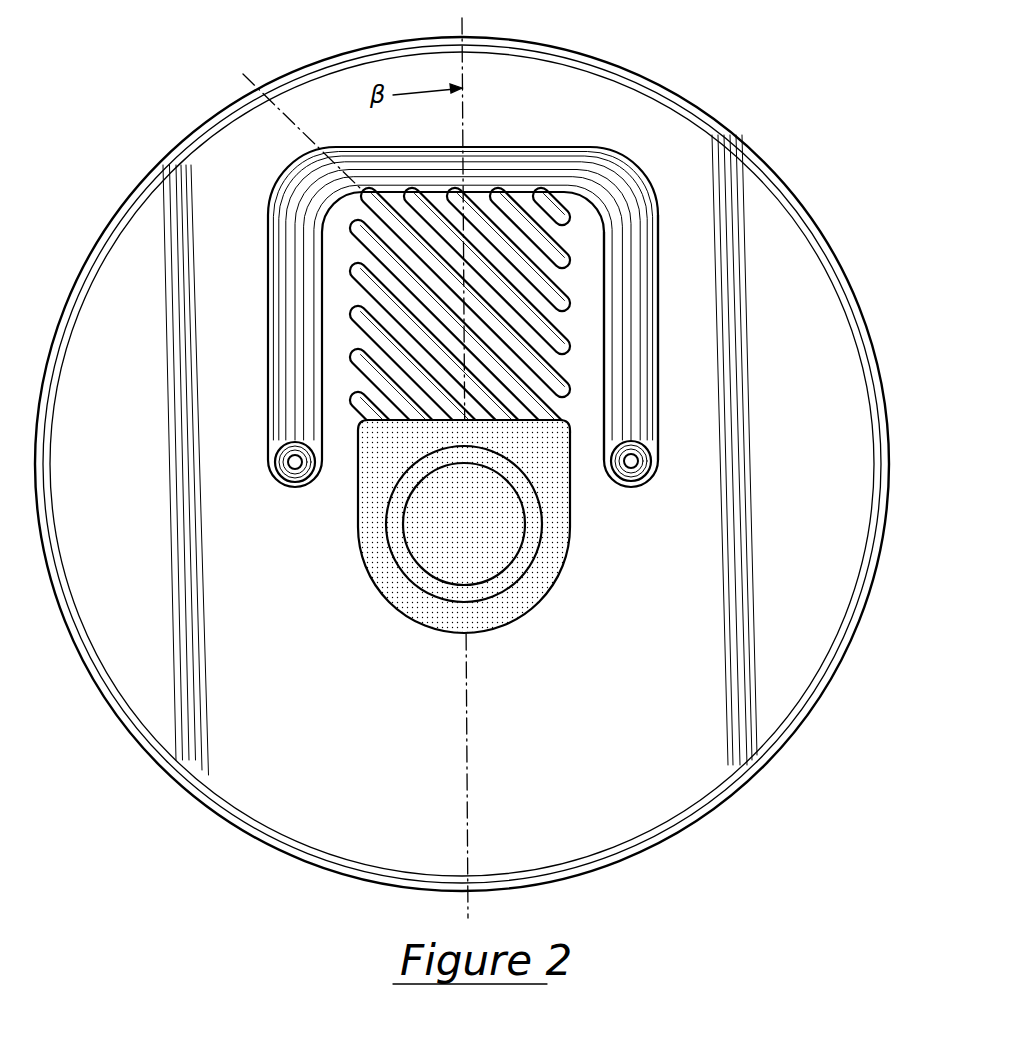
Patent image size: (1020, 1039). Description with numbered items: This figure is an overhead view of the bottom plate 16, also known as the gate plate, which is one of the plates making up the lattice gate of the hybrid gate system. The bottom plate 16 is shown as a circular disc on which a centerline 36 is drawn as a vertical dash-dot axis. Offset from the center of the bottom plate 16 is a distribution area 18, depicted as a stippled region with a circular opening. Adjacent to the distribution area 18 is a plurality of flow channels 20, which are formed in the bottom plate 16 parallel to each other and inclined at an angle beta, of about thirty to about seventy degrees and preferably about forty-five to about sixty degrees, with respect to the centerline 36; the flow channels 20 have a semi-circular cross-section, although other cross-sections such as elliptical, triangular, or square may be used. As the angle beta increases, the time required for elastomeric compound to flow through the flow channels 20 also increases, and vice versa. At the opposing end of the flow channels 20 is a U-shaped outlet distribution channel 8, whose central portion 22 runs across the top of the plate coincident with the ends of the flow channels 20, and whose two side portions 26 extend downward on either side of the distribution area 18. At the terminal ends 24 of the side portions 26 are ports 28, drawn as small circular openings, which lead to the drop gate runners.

The U-shaped outlet distribution channel 8 is at (586, 174).
The bottom plate 16 is at (793, 187).
The distribution area 18 is at (519, 586).
The flow channels 20 is at (565, 296).
The central portion 22 is at (493, 170).
The terminal ends 24 is at (642, 486).
The side portions 26 is at (636, 330).
The ports 28 is at (638, 452).
The centerline 36 is at (468, 736).